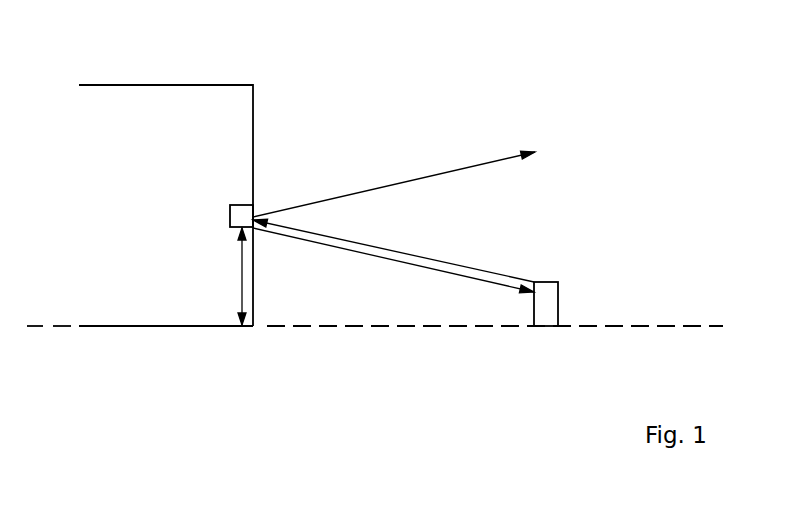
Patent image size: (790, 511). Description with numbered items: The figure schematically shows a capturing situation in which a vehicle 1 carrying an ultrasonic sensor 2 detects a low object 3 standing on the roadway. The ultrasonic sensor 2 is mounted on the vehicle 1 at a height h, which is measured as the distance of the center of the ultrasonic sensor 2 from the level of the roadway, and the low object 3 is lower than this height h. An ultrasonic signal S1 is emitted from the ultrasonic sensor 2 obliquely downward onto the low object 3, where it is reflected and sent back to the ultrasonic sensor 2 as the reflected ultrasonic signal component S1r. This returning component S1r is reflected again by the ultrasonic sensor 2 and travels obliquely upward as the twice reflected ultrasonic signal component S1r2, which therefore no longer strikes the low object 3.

The vehicle 1 is at (232, 85).
The ultrasonic sensor 2 is at (253, 197).
The low object 3 is at (558, 302).
The height h is at (233, 276).
The ultrasonic signal S1 is at (432, 260).
The reflected ultrasonic signal component S1r is at (363, 253).
The twice reflected ultrasonic signal component S1r2 is at (393, 182).